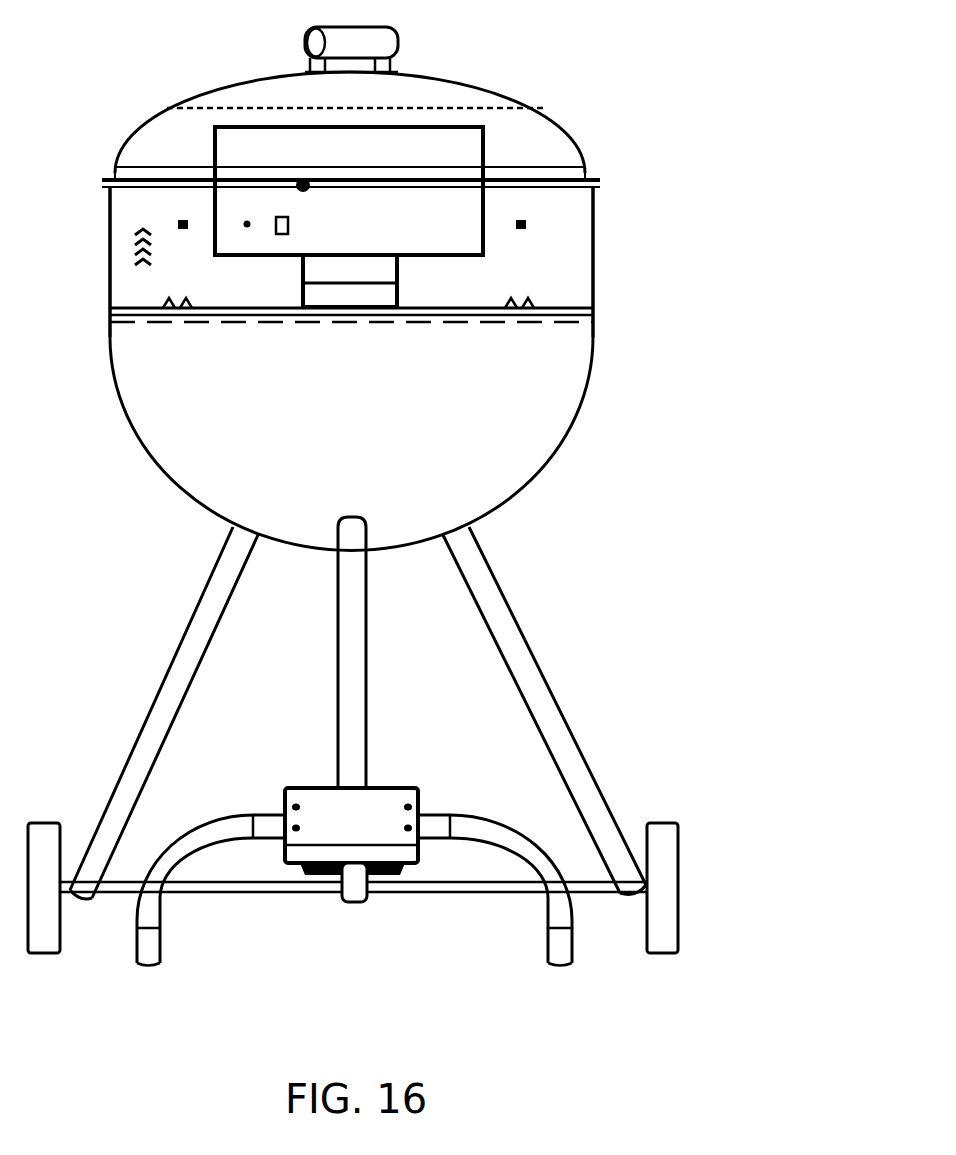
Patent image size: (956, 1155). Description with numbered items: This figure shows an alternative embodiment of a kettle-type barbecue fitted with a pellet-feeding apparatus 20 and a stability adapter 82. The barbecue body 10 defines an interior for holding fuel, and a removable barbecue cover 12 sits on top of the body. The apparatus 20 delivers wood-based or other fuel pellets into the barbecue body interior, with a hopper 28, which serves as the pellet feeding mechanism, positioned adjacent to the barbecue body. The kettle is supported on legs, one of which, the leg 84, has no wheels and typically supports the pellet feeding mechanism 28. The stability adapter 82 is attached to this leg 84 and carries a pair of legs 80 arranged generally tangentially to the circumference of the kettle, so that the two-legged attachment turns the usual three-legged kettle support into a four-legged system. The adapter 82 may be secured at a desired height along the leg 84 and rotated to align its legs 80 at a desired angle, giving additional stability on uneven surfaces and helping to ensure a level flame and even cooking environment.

The barbecue body 10 is at (590, 407).
The barbecue cover 12 is at (555, 77).
The apparatus 20 is at (653, 250).
The hopper 28 is at (303, 185).
The legs 80 is at (182, 960).
The stability adapter 82 is at (427, 800).
The leg 84 is at (393, 717).